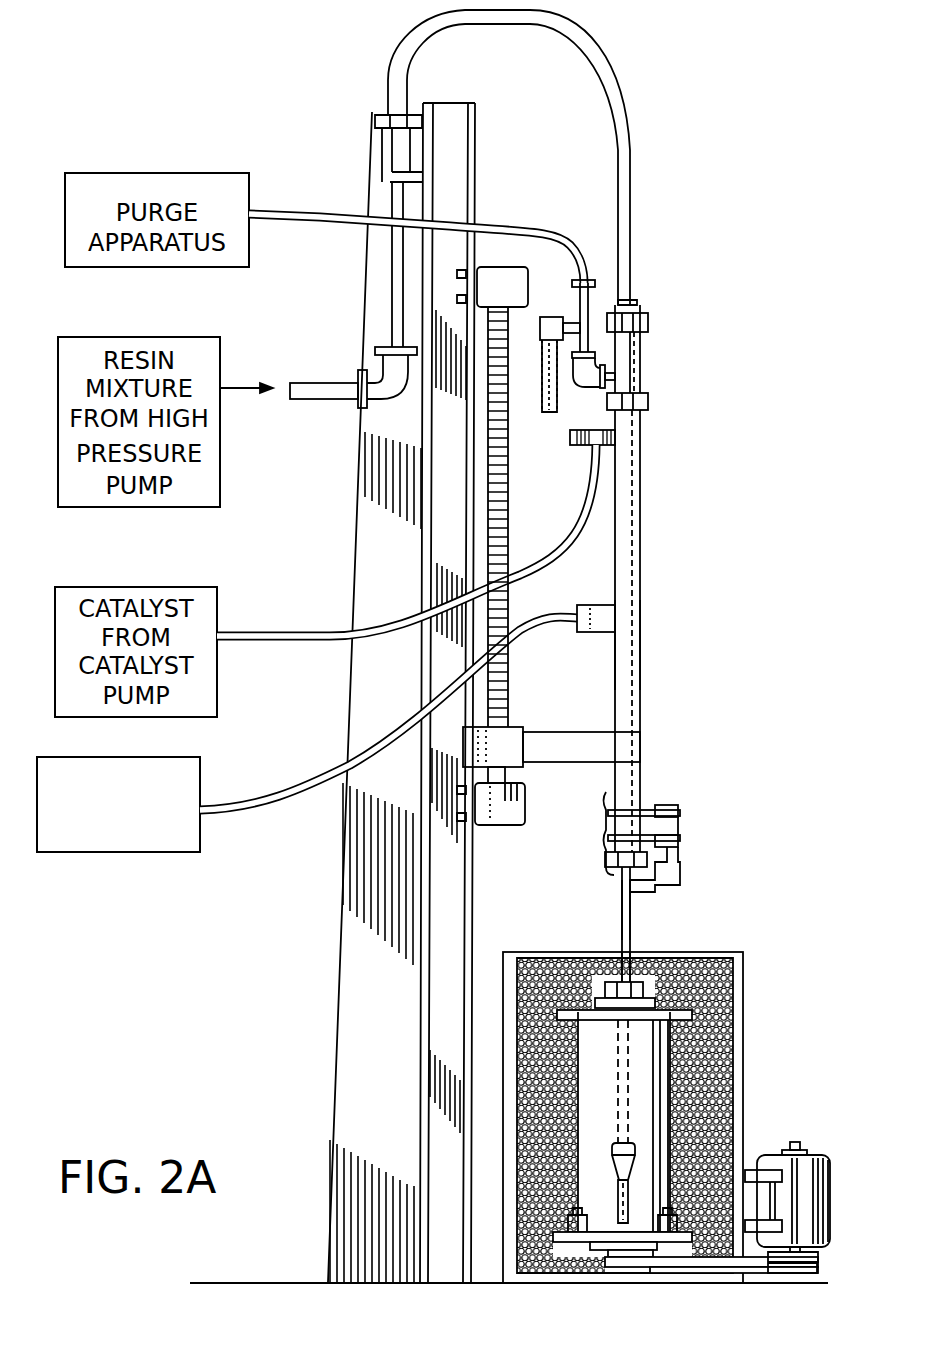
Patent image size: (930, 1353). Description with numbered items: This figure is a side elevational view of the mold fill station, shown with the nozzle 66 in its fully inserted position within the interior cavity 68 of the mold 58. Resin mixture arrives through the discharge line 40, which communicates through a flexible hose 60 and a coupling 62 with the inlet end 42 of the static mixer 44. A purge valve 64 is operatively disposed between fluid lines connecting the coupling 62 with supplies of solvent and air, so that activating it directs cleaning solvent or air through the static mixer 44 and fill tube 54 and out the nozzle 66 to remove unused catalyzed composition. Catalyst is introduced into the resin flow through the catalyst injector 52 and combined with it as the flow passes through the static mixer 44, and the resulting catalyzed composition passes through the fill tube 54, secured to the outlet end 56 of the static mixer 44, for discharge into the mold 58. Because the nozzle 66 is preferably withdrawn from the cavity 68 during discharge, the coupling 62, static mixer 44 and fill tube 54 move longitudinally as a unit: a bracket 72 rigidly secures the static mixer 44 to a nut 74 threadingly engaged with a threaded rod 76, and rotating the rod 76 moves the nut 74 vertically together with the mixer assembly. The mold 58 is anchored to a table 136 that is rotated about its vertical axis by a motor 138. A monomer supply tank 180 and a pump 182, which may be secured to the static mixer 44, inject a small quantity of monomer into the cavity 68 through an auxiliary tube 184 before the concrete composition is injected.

The discharge line 40 is at (332, 383).
The inlet end of static mixer 42 is at (640, 425).
The static mixer 44 is at (640, 643).
The catalyst injector 52 is at (612, 452).
The fill tube 54 is at (632, 923).
The outlet end of static mixer 56 is at (620, 825).
The mold 58 is at (662, 1070).
The flexible hose 60 is at (603, 40).
The coupling 62 is at (640, 360).
The purge valve 64 is at (541, 380).
The nozzle 66 is at (617, 1212).
The interior cavity 68 is at (614, 1104).
The bracket 72 is at (598, 732).
The nut 74 is at (518, 737).
The threaded rod 76 is at (508, 658).
The table 136 is at (553, 1238).
The motor 138 is at (823, 1155).
The monomer supply tank 180 is at (138, 842).
The pump 182 is at (595, 605).
The auxiliary tube 184 is at (617, 907).